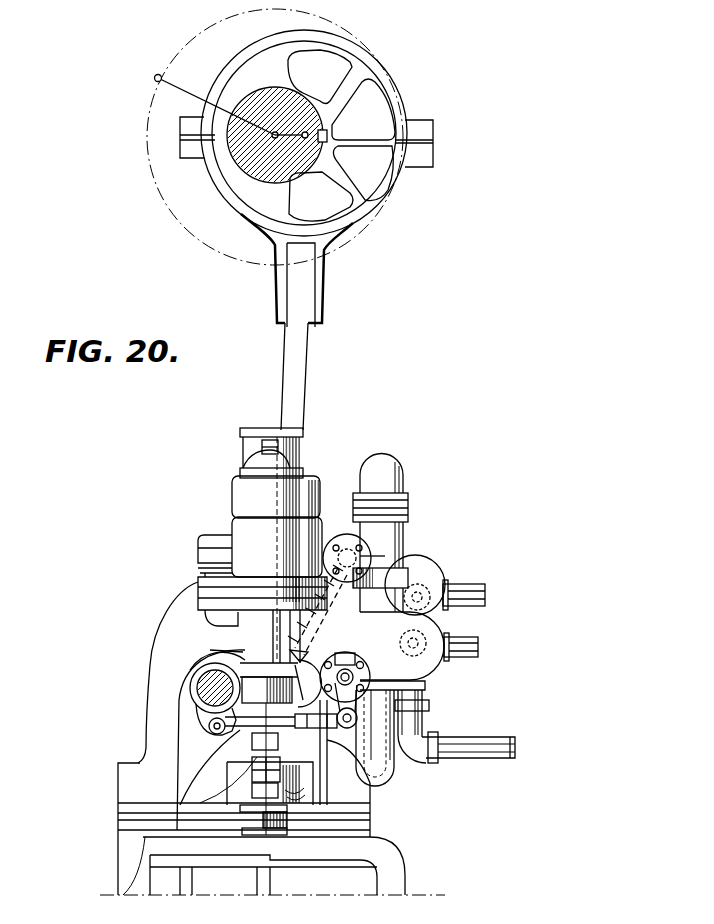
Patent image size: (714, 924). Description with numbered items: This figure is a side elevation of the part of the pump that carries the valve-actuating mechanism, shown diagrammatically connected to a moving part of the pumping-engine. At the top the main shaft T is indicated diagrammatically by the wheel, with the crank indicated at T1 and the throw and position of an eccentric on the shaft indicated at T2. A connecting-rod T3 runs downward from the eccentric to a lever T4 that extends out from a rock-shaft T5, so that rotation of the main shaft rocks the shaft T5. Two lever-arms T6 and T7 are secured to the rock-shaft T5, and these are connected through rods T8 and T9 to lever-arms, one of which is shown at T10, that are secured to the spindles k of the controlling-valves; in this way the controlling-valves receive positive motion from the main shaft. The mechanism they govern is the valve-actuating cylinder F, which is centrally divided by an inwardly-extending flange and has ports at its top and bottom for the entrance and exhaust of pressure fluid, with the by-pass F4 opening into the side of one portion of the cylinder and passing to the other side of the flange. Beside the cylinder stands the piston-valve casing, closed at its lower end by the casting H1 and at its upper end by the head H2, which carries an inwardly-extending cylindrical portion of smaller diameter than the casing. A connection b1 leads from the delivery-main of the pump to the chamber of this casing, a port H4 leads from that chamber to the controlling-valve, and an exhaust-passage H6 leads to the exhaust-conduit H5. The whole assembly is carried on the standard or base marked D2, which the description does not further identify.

The main shaft T is at (240, 162).
The crank T1 is at (156, 81).
The eccentric T2 is at (328, 158).
The connecting-rod T3 is at (293, 393).
The lever T4 is at (306, 682).
The rock-shaft T5 is at (192, 685).
The lever-arm T6 is at (194, 720).
The lever-arm T7 is at (225, 736).
The rod T8 is at (303, 740).
The rod T9 is at (300, 657).
The lever-arm T10 is at (425, 719).
The valve-actuating cylinder F is at (235, 497).
The by-pass F4 is at (207, 618).
The spindle k is at (345, 556).
The casting H1 is at (402, 472).
The head H2 is at (407, 573).
The port H4 is at (395, 777).
The exhaust-conduit H5 is at (485, 596).
The exhaust-passage H6 is at (478, 645).
The connection b1 is at (477, 758).
The pedestal D2 is at (243, 818).